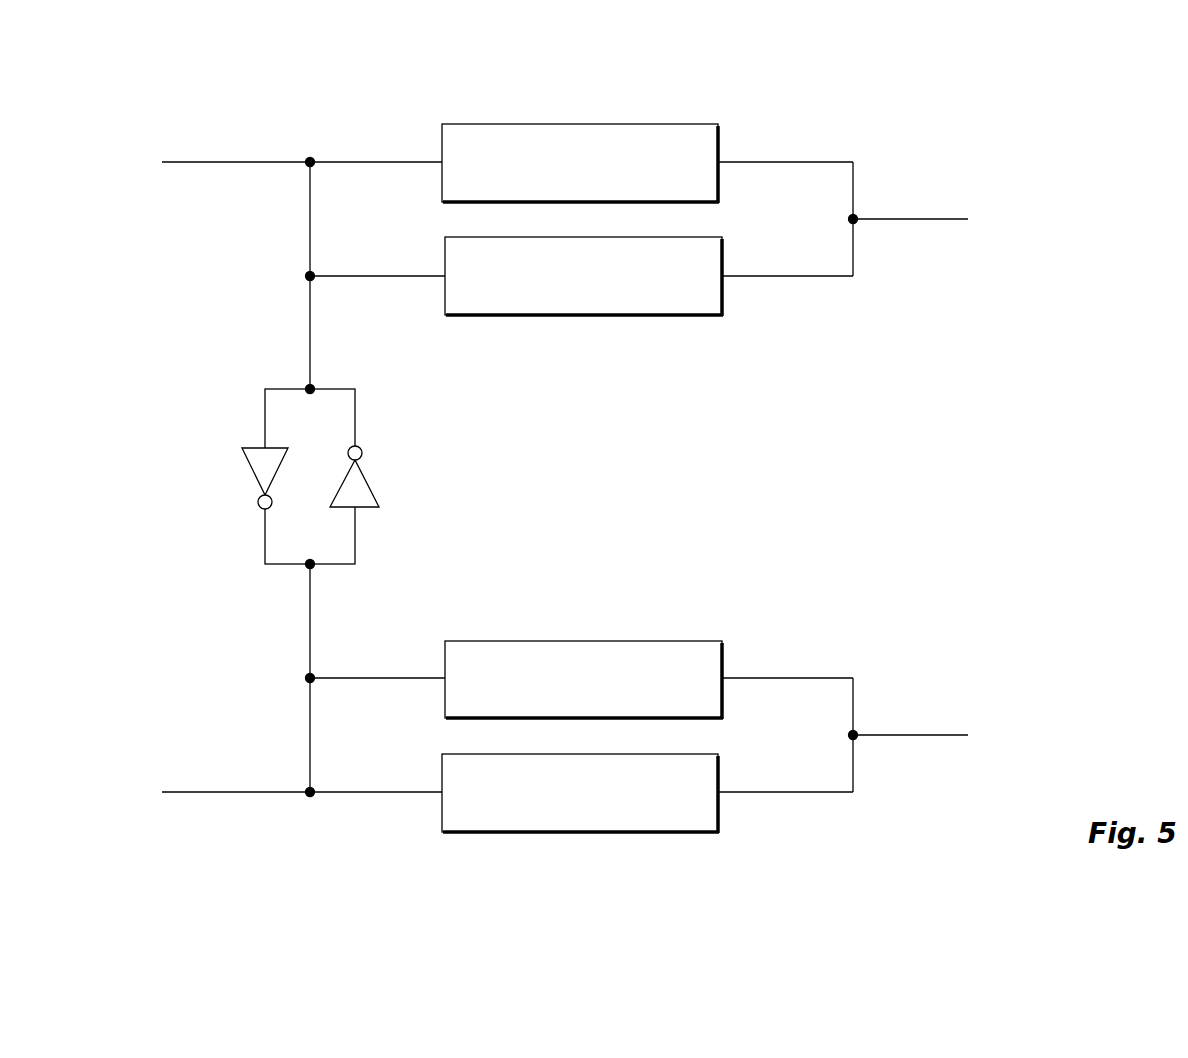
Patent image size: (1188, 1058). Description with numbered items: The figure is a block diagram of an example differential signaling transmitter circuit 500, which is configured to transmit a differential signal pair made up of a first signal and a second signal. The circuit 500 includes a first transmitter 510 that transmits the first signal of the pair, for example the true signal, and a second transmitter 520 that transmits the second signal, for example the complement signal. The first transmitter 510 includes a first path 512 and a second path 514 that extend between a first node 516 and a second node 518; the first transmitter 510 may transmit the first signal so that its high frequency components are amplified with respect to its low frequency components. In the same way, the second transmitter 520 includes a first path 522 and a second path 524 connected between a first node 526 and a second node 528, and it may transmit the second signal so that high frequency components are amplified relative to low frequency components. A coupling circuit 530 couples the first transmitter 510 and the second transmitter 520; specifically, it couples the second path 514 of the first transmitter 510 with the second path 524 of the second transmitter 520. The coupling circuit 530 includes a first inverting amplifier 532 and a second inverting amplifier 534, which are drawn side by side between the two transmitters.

The differential signaling transmitter circuit 500 is at (654, 448).
The first transmitter 510 is at (565, 197).
The first path 512 is at (580, 163).
The second path 514 is at (584, 276).
The first node 516 is at (312, 160).
The second node 518 is at (855, 218).
The second transmitter 520 is at (565, 713).
The first path 522 is at (580, 793).
The second path 524 is at (584, 680).
The first node 526 is at (312, 790).
The second node 528 is at (855, 734).
The coupling circuit 530 is at (315, 450).
The first inverting amplifier 532 is at (372, 483).
The second inverting amplifier 534 is at (256, 484).